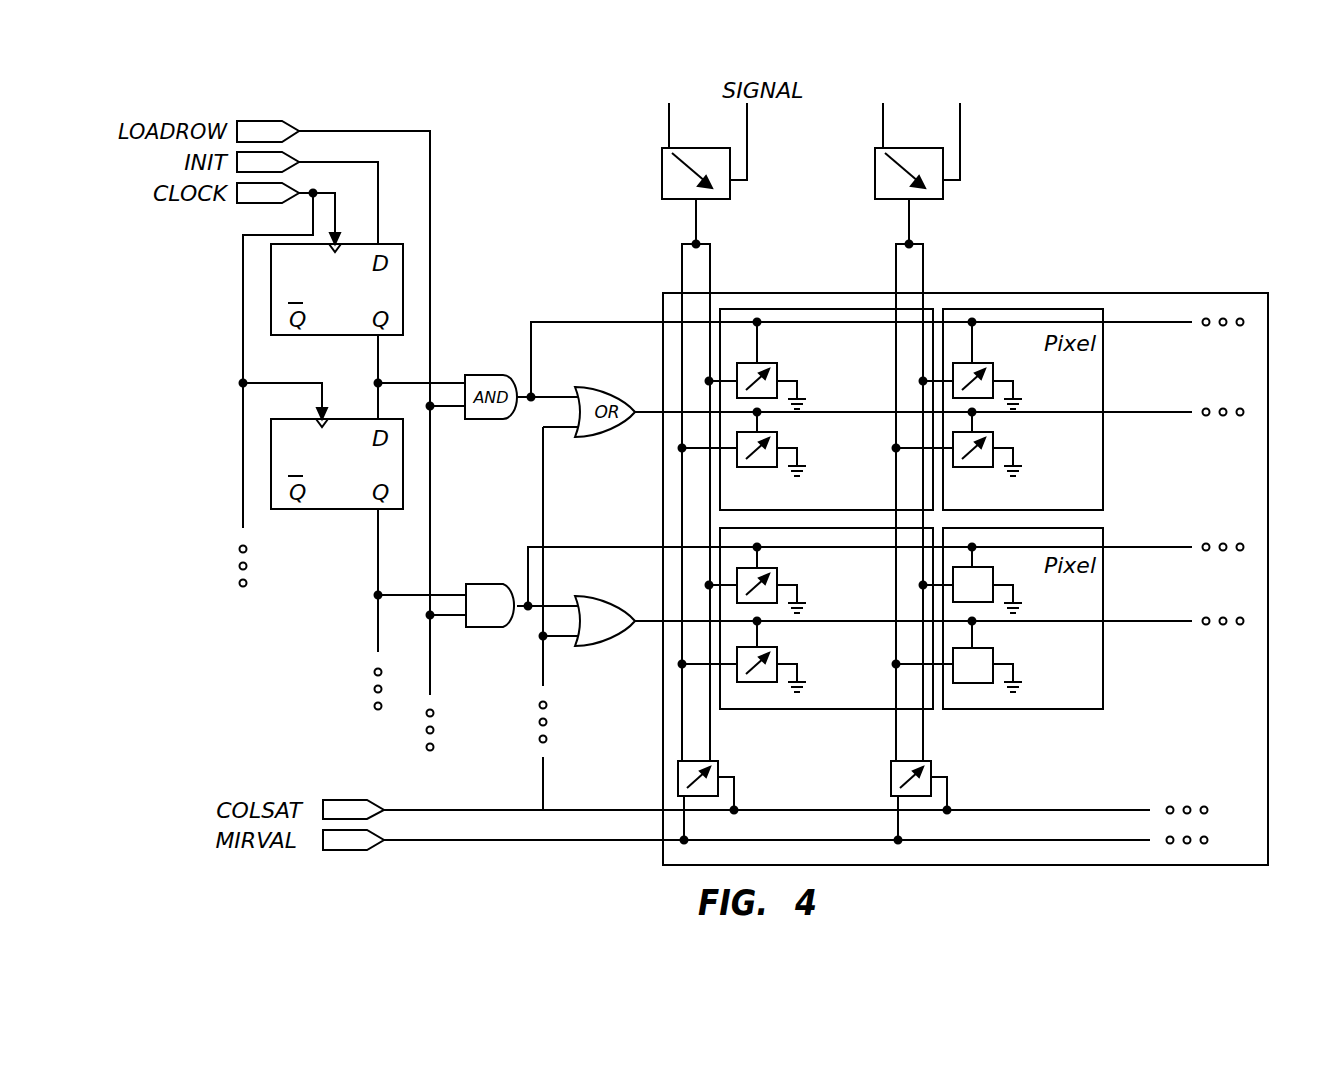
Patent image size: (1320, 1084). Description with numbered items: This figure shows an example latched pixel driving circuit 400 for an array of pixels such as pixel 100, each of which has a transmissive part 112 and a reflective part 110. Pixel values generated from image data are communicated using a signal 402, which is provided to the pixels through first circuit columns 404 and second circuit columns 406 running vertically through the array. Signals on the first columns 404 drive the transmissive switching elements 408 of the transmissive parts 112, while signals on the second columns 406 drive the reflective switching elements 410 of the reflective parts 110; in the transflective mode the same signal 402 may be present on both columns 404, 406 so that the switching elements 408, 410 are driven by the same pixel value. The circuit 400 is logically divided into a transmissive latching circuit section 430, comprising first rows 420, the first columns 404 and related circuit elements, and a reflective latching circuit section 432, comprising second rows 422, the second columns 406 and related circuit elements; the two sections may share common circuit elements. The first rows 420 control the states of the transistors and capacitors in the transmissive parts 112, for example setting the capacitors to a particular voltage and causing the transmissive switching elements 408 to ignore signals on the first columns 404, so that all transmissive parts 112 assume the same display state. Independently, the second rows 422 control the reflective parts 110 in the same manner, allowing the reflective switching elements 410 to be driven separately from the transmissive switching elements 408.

The latched pixel driving circuit 400 is at (1236, 160).
The signal 402 is at (915, 147).
The first circuit columns 404 is at (711, 738).
The second circuit columns 406 is at (895, 282).
The transmissive switching elements 408 is at (779, 367).
The reflective switching elements 410 is at (757, 467).
The pixel 100 is at (866, 358).
The reflective part 110 is at (822, 487).
The transmissive part 112 is at (818, 393).
The first rows 420 is at (1132, 324).
The second rows 422 is at (1167, 620).
The transmissive latching circuit section 430 is at (740, 322).
The reflective latching circuit section 432 is at (715, 432).